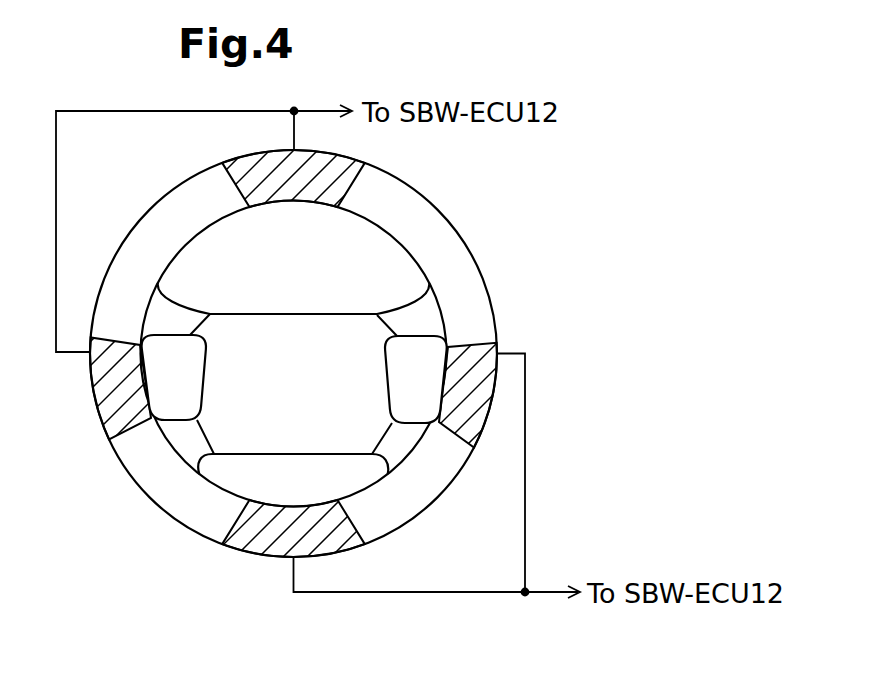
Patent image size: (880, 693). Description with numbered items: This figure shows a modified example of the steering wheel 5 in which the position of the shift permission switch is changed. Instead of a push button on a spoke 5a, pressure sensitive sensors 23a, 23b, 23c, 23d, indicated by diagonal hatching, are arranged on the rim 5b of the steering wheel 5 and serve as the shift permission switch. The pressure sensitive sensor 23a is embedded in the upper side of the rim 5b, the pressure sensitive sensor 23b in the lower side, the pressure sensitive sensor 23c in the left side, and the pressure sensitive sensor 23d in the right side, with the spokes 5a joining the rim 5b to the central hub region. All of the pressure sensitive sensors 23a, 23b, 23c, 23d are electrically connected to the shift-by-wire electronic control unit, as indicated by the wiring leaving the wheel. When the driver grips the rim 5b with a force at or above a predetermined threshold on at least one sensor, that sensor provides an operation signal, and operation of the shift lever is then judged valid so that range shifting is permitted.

The steering wheel 5 is at (120, 178).
The spoke 5a is at (403, 424).
The rim 5b is at (188, 181).
The pressure sensitive sensor 23a is at (290, 203).
The pressure sensitive sensor 23b is at (302, 507).
The pressure sensitive sensor 23c is at (148, 392).
The pressure sensitive sensor 23d is at (499, 344).